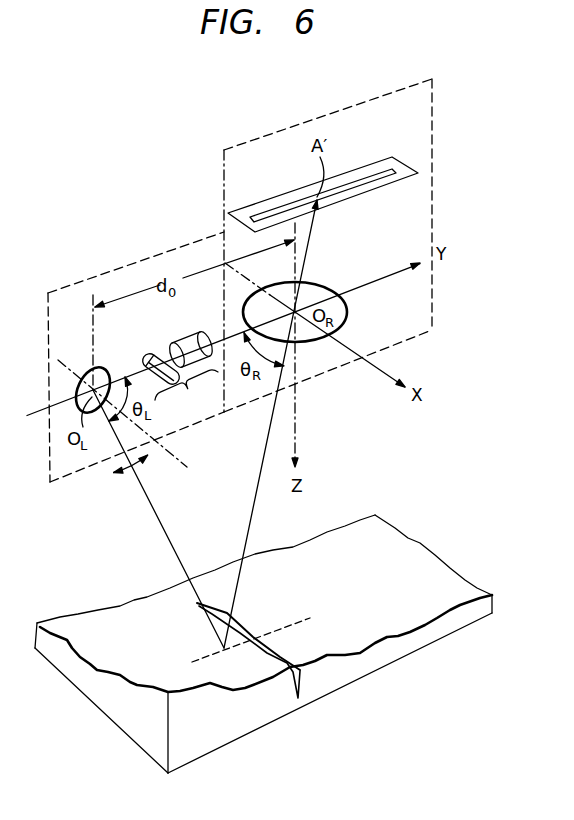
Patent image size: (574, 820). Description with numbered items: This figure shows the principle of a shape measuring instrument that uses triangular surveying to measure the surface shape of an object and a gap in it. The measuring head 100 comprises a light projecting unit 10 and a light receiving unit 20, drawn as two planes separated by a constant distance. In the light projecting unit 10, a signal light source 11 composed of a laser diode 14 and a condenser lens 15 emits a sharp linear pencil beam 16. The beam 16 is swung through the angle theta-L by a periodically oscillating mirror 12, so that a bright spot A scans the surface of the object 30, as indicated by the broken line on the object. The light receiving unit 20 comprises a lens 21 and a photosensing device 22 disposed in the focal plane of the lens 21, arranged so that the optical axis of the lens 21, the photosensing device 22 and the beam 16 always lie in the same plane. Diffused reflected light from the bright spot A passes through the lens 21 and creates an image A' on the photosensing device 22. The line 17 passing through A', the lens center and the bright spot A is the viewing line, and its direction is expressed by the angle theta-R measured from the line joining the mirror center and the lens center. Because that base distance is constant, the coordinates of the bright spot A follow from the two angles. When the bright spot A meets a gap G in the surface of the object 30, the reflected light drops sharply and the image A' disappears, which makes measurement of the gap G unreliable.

The measuring head 100 is at (190, 159).
The light projecting unit 10 is at (100, 276).
The light receiving unit 20 is at (432, 184).
The photosensing device 22 is at (400, 165).
The lens 21 is at (347, 312).
The periodically oscillating mirror 12 is at (87, 372).
The signal light source 11 is at (175, 358).
The laser diode 14 is at (197, 337).
The condenser lens 15 is at (150, 353).
The signal light beam 16 is at (147, 494).
The viewing line 17 is at (262, 511).
The object 30 is at (443, 568).
The gap G is at (302, 679).
The bright spot A is at (251, 645).